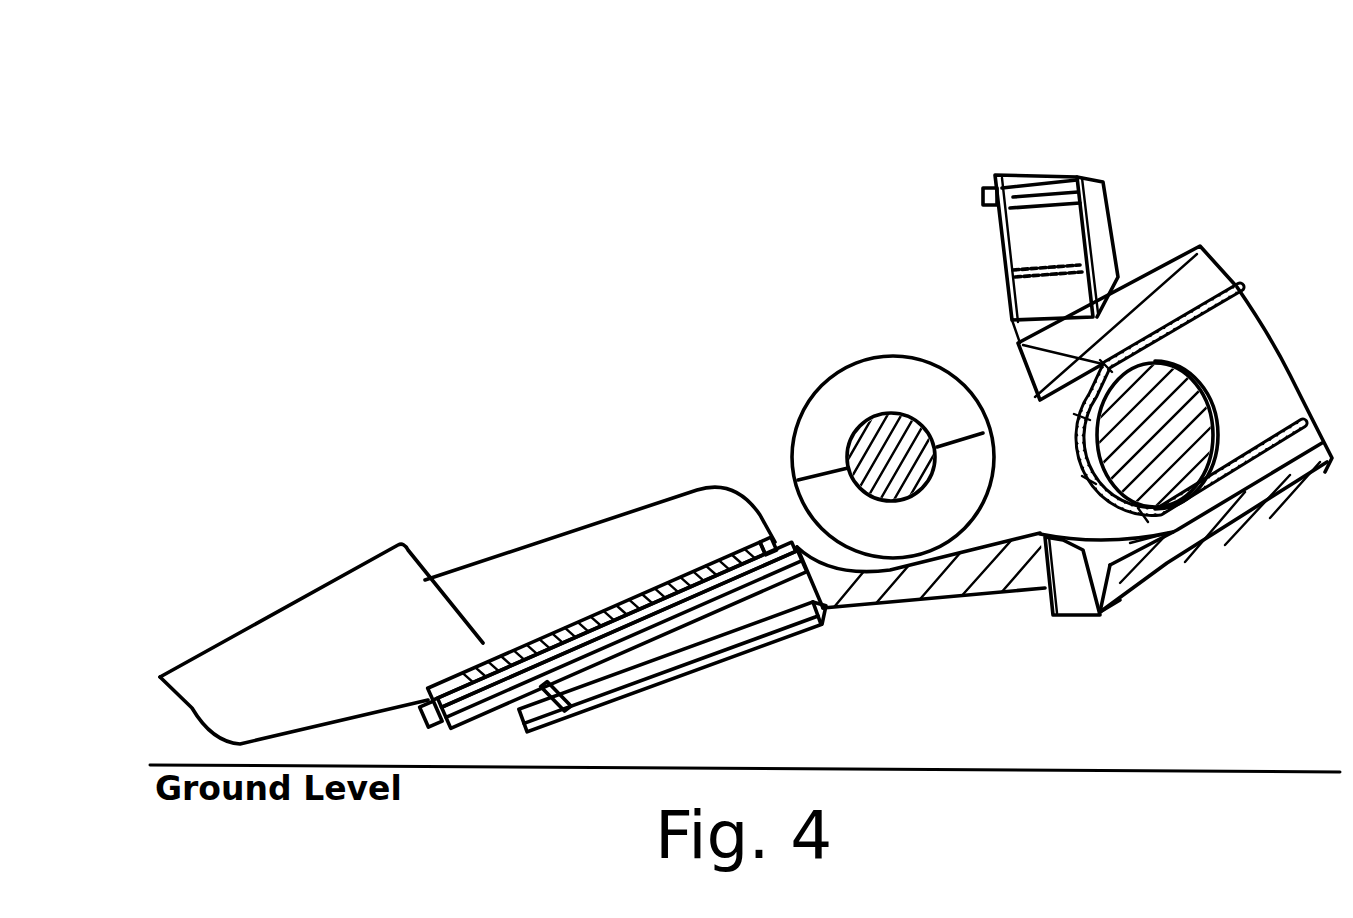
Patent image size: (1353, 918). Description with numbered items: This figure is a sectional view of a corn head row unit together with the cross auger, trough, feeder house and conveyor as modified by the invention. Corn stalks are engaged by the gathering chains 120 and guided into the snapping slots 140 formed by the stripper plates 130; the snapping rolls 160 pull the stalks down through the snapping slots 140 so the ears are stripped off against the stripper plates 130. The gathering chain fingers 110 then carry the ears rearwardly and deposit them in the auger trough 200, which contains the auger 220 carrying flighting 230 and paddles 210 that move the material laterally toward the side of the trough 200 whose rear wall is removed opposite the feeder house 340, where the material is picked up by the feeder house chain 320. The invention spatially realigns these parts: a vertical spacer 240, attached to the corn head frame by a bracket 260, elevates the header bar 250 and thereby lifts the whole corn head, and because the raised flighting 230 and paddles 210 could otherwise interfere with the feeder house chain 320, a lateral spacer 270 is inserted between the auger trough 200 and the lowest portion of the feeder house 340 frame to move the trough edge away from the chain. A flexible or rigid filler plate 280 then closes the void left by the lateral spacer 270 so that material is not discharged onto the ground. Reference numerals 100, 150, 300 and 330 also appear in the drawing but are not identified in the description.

The hopper 100 is at (352, 640).
The gathering chain fingers 110 is at (428, 690).
The gathering chains 120 is at (478, 668).
The stripper plates 130 is at (531, 700).
The snapping slots 140 is at (578, 618).
The conveyor housing 150 is at (622, 575).
The snapping rolls 160 is at (740, 605).
The auger trough 200 is at (853, 590).
The paddles 210 is at (822, 485).
The auger 220 is at (886, 465).
The flighting 230 is at (952, 415).
The vertical spacer 240 is at (1032, 295).
The header bar 250 is at (1067, 250).
The bracket 260 is at (1105, 252).
The lateral spacer 270 is at (1073, 578).
The filler plate 280 is at (1121, 542).
The roller 300 is at (1141, 430).
The feeder house chain 320 is at (1185, 395).
The outer housing 330 is at (1215, 400).
The feeder house 340 is at (1293, 480).